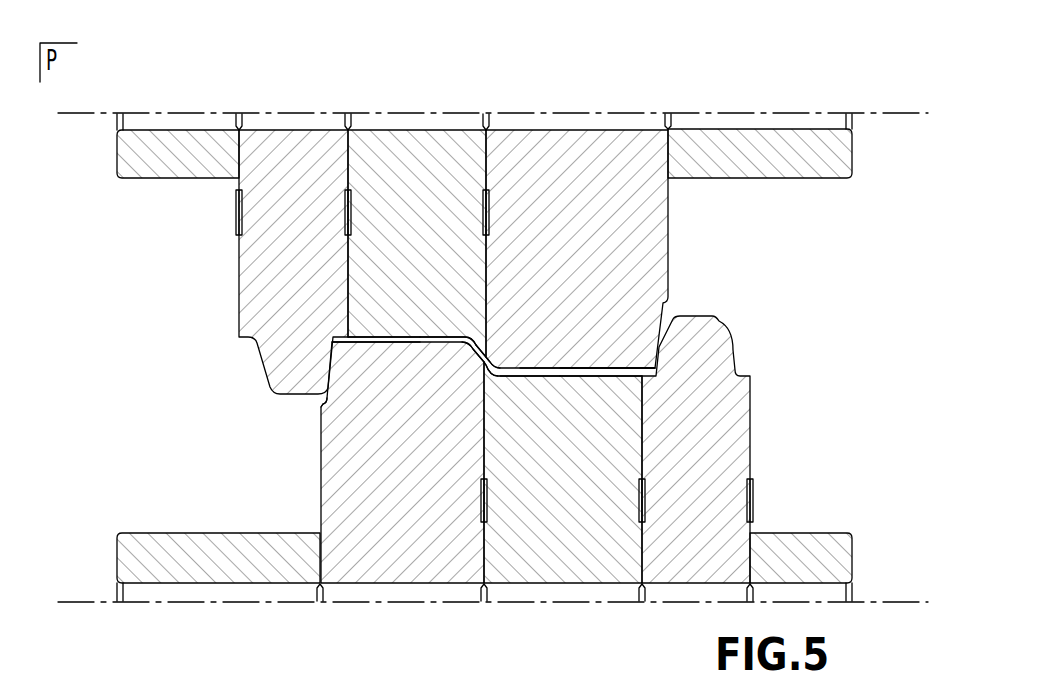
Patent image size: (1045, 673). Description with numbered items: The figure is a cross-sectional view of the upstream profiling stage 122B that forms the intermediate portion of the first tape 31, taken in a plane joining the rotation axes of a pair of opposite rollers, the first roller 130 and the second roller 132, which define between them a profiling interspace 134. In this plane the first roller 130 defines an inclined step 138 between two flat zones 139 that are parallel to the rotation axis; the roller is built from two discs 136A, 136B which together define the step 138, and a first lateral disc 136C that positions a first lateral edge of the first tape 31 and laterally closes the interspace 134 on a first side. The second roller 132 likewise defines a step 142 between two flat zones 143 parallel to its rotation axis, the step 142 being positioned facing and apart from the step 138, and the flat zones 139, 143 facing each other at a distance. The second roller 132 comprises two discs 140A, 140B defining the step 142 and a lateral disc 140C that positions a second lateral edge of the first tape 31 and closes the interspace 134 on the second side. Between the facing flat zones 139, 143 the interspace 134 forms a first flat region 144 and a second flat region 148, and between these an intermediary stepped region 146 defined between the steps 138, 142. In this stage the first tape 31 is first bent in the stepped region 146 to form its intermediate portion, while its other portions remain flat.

The first roller 130 is at (226, 67).
The second roller 132 is at (336, 635).
The upstream profiling stage 122B is at (125, 385).
The disc 136A is at (390, 162).
The disc 136B is at (595, 172).
The first lateral disc 136C is at (263, 268).
The disc 140A is at (392, 560).
The disc 140B is at (595, 563).
The lateral disc 140C is at (710, 447).
The first tape 31 is at (443, 340).
The profiling interspace 134 is at (572, 370).
The inclined step 138 is at (491, 352).
The flat zones 139 is at (620, 366).
The step 142 is at (474, 352).
The flat zones 143 is at (320, 412).
The first flat region 144 is at (380, 343).
The intermediary stepped region 146 is at (491, 380).
The second flat region 148 is at (587, 378).